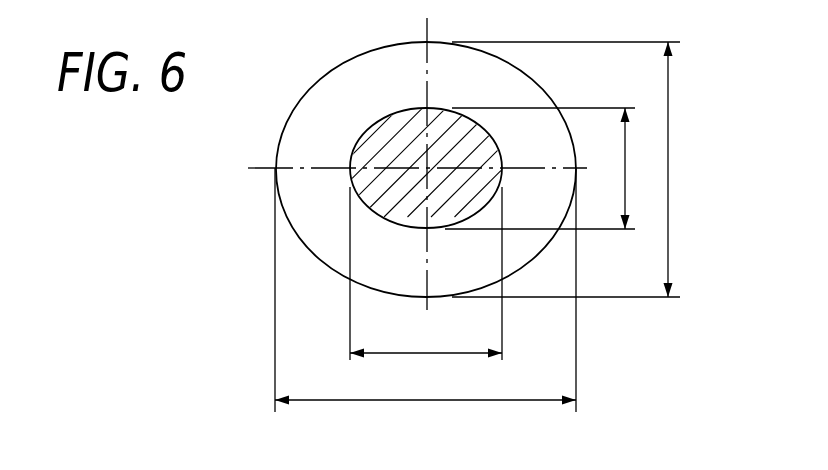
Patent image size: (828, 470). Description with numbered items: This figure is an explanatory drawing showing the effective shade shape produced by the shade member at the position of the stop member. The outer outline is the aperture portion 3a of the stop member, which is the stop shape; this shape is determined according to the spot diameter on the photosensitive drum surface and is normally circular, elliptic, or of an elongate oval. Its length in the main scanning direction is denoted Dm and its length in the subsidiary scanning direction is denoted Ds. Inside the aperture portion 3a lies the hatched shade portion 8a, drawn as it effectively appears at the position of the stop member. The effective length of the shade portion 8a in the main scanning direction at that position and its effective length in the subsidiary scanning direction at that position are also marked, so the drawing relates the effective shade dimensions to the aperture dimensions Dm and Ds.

The aperture portion 3a is at (312, 83).
The shade portion 8a is at (353, 145).
The length of the aperture portion in the subsidiary scanning direction Ds is at (566, 169).
The length of the aperture portion in the main scanning direction Dm is at (425, 290).